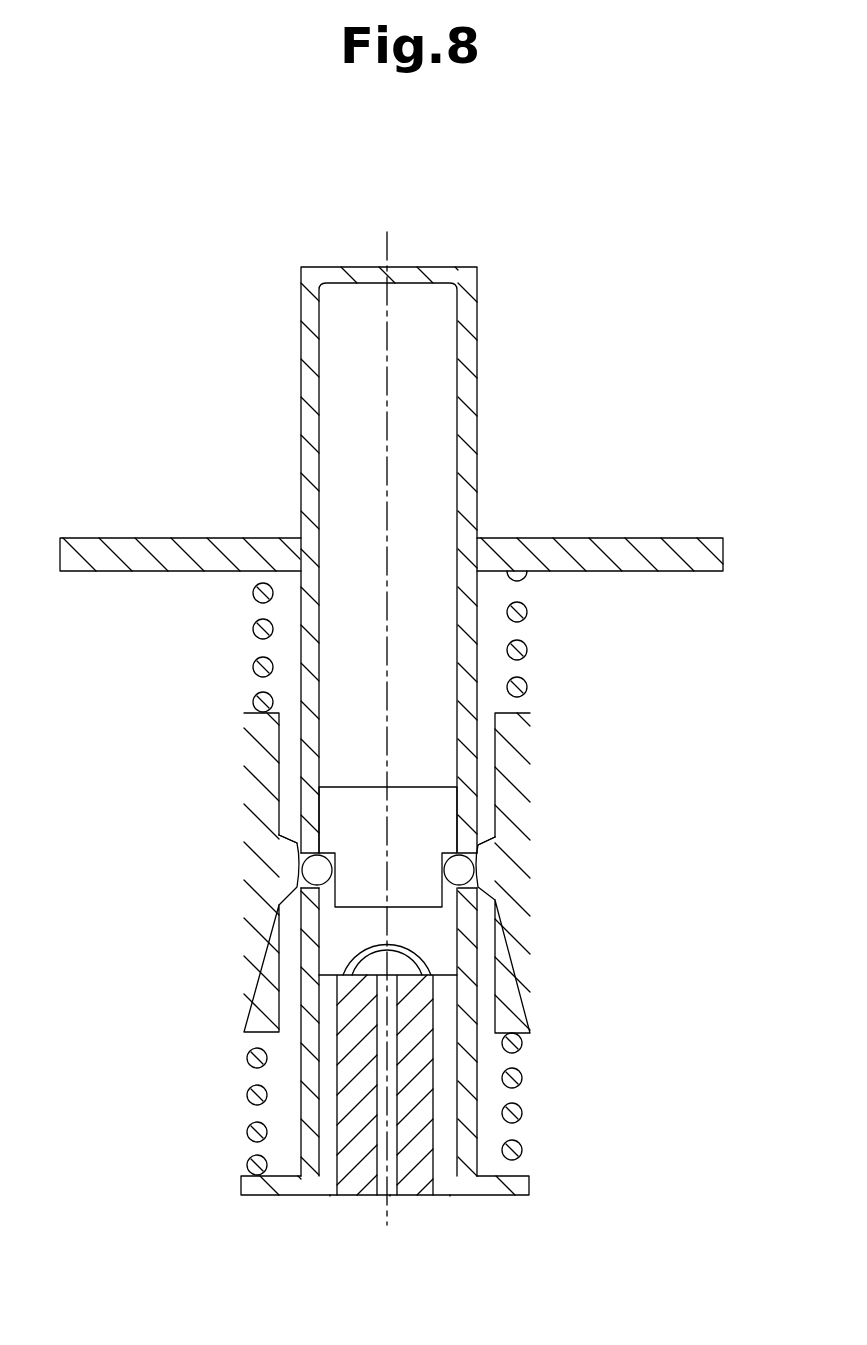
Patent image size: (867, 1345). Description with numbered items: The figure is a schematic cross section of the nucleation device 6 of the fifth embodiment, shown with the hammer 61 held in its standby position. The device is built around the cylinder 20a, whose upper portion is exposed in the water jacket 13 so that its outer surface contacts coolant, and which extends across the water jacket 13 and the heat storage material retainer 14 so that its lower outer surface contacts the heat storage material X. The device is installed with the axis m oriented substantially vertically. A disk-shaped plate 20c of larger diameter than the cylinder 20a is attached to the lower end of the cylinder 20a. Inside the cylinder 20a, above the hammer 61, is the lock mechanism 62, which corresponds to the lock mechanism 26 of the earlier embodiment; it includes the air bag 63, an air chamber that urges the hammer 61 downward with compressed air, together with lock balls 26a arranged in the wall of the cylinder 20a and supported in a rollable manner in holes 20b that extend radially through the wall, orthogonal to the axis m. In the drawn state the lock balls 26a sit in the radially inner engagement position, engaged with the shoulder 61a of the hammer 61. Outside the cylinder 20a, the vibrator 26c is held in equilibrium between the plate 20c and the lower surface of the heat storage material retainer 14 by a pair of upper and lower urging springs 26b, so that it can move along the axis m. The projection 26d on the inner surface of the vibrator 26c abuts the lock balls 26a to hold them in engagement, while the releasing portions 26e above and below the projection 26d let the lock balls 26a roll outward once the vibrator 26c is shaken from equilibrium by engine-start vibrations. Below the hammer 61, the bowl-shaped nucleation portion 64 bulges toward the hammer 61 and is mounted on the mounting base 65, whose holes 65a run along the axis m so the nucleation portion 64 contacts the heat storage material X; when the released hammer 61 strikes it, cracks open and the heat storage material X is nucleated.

The axis m is at (388, 242).
The cylinder 20a is at (478, 318).
The air bag 63 is at (440, 428).
The water jacket 13 is at (673, 350).
The heat storage material retainer 14 is at (640, 540).
The plate 20c is at (515, 1177).
The holes 20b is at (300, 875).
The hammer 61 is at (446, 806).
The shoulder 61a is at (466, 866).
The nucleation portion 64 is at (440, 946).
The lock mechanism 62 is at (339, 943).
The mounting base 65 is at (472, 1104).
The holes 65a is at (330, 1195).
The urging springs 26b is at (525, 610).
The heat storage material X is at (664, 695).
The lock mechanism 26 is at (416, 872).
The releasing portions 26e is at (282, 768).
The vibrator 26c is at (512, 742).
The projection 26d is at (297, 843).
The lock balls 26a is at (300, 903).
The nucleation device 6 is at (234, 1062).